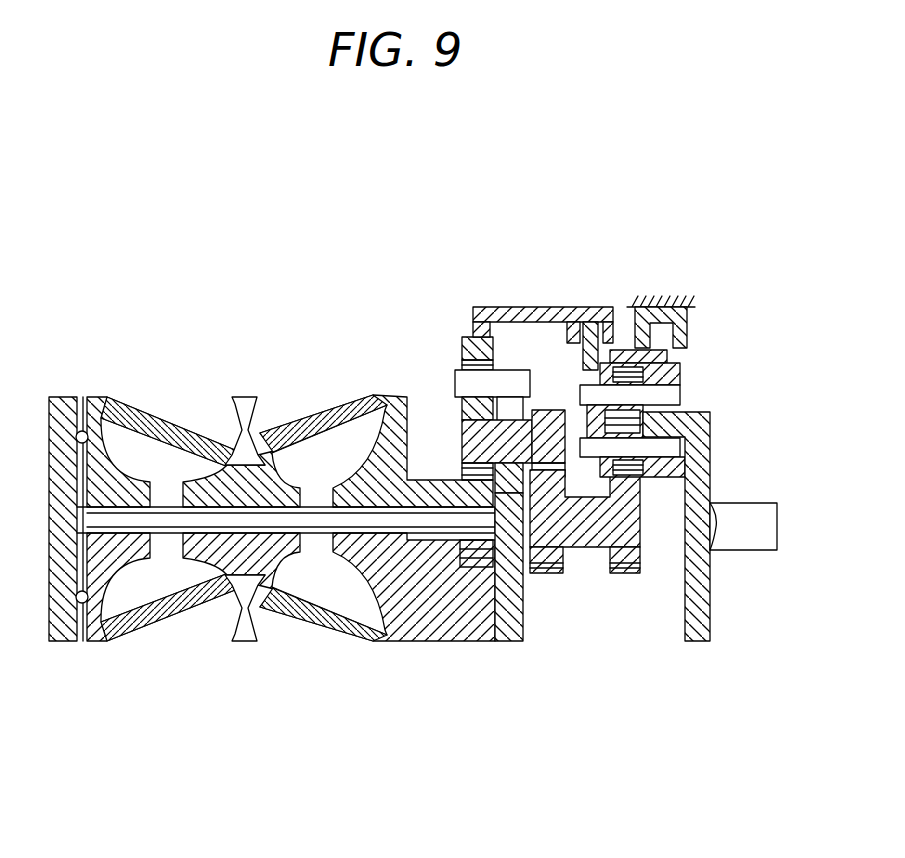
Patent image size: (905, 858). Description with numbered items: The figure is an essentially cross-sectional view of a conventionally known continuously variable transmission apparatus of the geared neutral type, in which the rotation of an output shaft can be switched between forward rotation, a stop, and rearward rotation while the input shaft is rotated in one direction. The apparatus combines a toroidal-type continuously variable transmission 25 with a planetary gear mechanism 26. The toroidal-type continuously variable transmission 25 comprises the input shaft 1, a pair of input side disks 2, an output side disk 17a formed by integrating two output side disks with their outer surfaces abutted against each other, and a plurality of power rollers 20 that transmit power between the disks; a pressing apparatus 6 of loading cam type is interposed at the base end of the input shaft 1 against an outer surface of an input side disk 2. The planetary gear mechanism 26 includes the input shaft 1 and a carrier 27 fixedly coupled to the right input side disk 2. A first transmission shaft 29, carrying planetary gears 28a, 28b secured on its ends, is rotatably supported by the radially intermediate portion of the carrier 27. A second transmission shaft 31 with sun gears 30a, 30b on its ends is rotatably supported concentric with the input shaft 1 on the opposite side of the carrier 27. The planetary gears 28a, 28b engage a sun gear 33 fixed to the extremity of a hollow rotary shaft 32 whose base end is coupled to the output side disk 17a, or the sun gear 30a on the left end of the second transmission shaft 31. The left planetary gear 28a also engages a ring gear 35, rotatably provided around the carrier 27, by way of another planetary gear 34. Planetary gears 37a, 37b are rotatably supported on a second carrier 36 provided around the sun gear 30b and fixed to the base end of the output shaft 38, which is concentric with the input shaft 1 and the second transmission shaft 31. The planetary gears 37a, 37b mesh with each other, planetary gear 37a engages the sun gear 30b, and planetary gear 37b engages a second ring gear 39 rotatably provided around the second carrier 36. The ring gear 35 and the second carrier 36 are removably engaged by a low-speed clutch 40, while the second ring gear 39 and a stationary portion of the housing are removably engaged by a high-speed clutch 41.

The input shaft 1 is at (85, 517).
The input side disk 2 is at (91, 398).
The pressing apparatus 6 is at (75, 440).
The output side disk 17a is at (240, 400).
The power roller 20 is at (158, 450).
The toroidal-type continuously variable transmission 25 is at (218, 384).
The planetary gear mechanism 26 is at (650, 616).
The carrier 27 is at (513, 307).
The planetary gear 28a is at (462, 440).
The planetary gear 28b is at (542, 420).
The first transmission shaft 29 is at (508, 610).
The sun gear 30a is at (541, 577).
The sun gear 30b is at (622, 562).
The second transmission shaft 31 is at (585, 528).
The hollow rotary shaft 32 is at (412, 615).
The sun gear 33 is at (466, 605).
The planetary gear 34 is at (462, 422).
The ring gear 35 is at (483, 335).
The second carrier 36 is at (712, 417).
The planetary gear 37a is at (645, 474).
The planetary gear 37b is at (640, 372).
The output shaft 38 is at (741, 540).
The second ring gear 39 is at (638, 307).
The low-speed clutch 40 is at (591, 322).
The high-speed clutch 41 is at (688, 330).